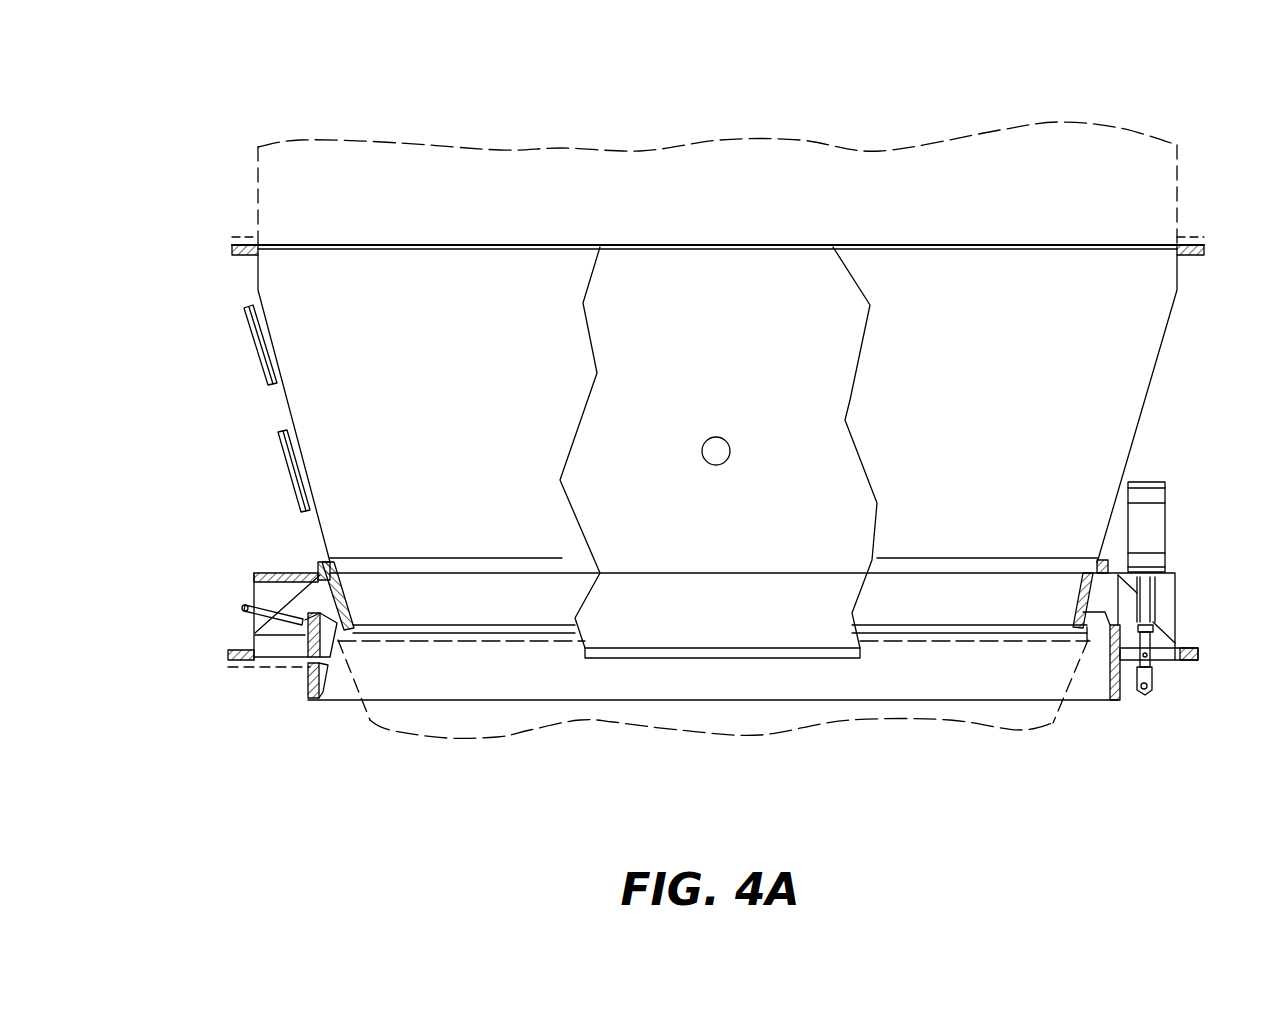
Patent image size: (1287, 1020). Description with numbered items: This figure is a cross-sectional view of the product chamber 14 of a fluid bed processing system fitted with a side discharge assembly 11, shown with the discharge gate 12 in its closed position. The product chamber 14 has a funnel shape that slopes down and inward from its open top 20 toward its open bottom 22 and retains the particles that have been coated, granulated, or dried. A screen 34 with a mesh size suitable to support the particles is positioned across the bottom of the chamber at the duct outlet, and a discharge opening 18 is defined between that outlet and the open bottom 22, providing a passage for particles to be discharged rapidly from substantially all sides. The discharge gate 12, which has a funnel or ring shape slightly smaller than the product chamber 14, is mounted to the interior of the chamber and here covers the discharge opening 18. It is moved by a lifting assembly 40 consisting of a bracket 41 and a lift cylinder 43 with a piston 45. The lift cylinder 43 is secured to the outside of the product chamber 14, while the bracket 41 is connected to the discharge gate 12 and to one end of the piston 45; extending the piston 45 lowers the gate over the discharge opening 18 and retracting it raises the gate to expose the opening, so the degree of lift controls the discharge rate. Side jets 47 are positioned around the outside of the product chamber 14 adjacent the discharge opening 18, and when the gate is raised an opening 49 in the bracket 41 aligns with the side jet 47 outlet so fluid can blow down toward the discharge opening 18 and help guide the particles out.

The open top 20 is at (768, 198).
The product chamber 14 is at (1158, 348).
The discharge opening 18 is at (363, 617).
The discharge gate 12 is at (347, 597).
The open bottom 22 is at (647, 730).
The screen 34 is at (507, 632).
The side jet 47 is at (250, 607).
The opening 49 is at (328, 665).
The bracket 41 is at (312, 700).
The side discharge assembly 11 is at (1188, 567).
The lift cylinder 43 is at (1150, 517).
The lifting assembly 40 is at (1192, 562).
The piston 45 is at (1147, 647).